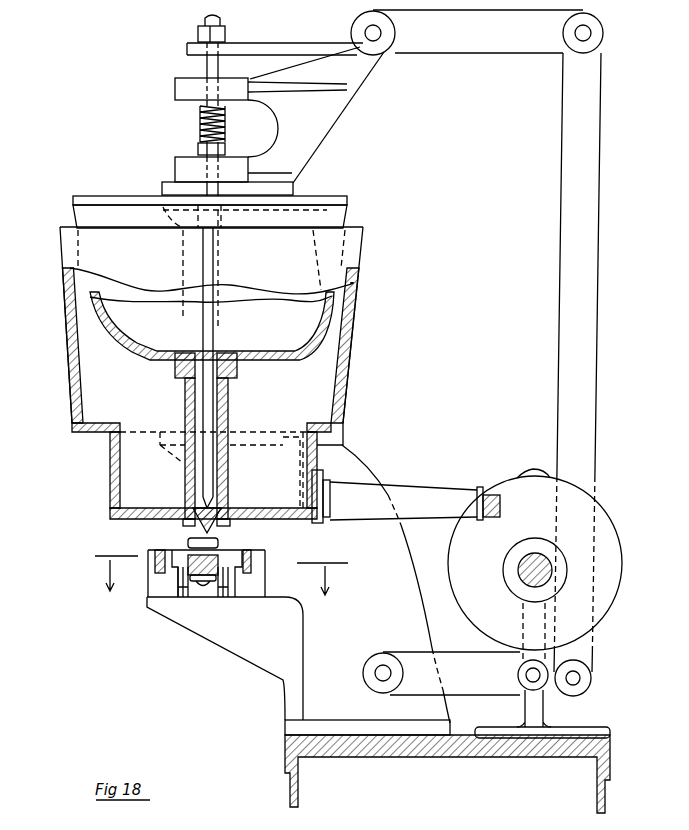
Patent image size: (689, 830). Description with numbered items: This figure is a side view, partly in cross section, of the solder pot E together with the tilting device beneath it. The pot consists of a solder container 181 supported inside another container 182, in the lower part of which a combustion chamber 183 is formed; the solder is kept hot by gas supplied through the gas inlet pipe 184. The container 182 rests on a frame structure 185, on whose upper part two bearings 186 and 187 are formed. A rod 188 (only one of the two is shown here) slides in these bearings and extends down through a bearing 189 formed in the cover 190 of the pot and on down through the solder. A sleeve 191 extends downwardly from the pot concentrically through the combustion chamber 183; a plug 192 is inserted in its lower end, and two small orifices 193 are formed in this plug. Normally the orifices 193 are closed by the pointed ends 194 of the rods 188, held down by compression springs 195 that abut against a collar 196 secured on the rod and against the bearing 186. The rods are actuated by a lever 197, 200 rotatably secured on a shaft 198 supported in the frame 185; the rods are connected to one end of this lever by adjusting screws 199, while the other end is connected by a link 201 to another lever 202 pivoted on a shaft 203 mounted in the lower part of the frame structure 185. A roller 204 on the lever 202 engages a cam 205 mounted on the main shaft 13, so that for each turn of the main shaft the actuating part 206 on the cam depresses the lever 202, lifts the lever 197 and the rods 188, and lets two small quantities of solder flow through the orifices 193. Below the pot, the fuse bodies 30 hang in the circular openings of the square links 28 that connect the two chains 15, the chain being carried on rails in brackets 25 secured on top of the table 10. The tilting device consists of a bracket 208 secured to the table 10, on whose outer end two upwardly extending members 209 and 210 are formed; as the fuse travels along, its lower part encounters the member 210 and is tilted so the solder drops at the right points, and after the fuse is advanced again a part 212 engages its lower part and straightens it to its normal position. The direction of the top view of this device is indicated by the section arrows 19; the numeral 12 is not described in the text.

The table 10 is at (602, 780).
The support column 12 is at (524, 708).
The main shaft 13 is at (524, 577).
The chains 15 is at (157, 560).
The section line 19 is at (221, 591).
The brackets 25 is at (148, 600).
The square links 28 is at (190, 540).
The fuse bodies 30 is at (197, 585).
The solder container 181 is at (212, 326).
The container 182 is at (207, 451).
The combustion chamber 183 is at (216, 470).
The gas inlet pipe 184 is at (406, 496).
The frame structure 185 is at (396, 584).
The bearing 186 is at (182, 85).
The bearing 187 is at (185, 168).
The rods 188 is at (203, 332).
The bearings 189 is at (224, 224).
The cover 190 is at (348, 202).
The sleeve 191 is at (221, 402).
The plug 192 is at (190, 520).
The orifices 193 is at (229, 522).
The pointed ends 194 is at (214, 503).
The compression springs 195 is at (199, 125).
The collar 196 is at (224, 148).
The lever 197 is at (273, 50).
The shaft 198 is at (378, 37).
The adjusting screws 199 is at (206, 36).
The lever 200 is at (488, 31).
The link 201 is at (577, 374).
The lever 202 is at (451, 673).
The shaft 203 is at (380, 678).
The roller 204 is at (546, 700).
The cam 205 is at (617, 596).
The actuating part 206 is at (531, 472).
The bracket 208 is at (225, 658).
The upwardly extending member 209 is at (231, 597).
The upwardly extending member 210 is at (175, 593).
The part 212 is at (213, 587).
The solder pot E is at (360, 288).